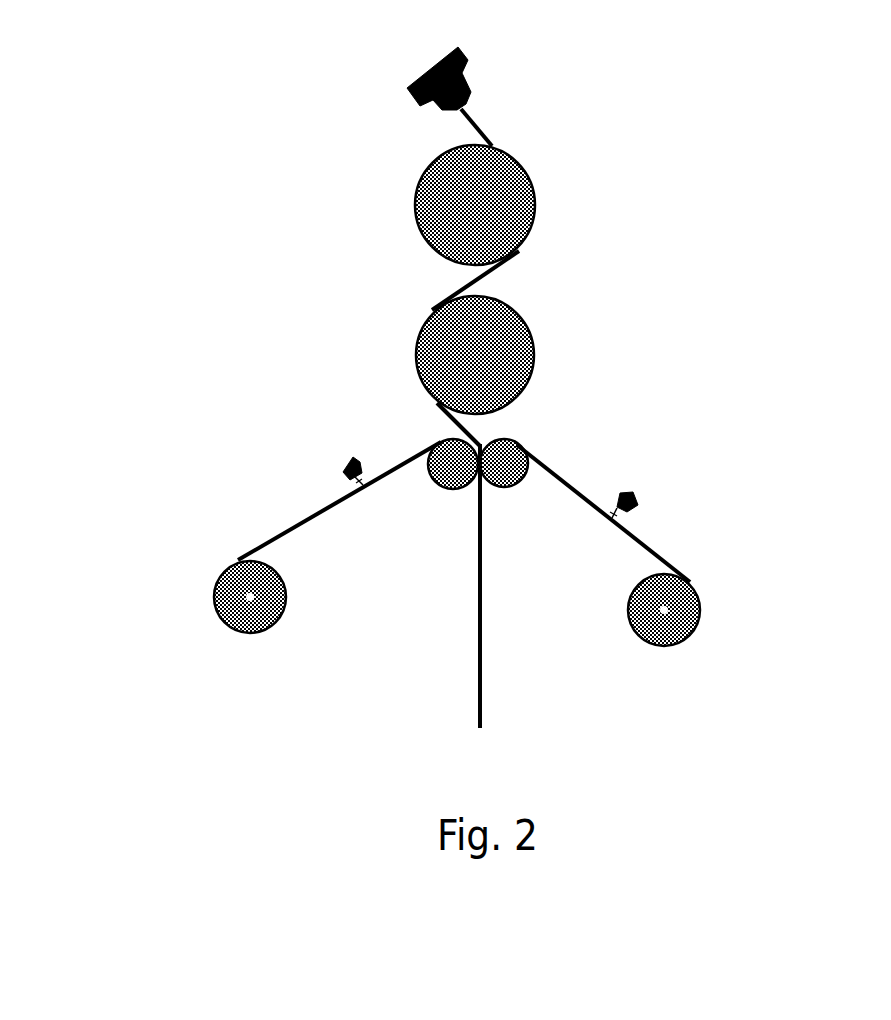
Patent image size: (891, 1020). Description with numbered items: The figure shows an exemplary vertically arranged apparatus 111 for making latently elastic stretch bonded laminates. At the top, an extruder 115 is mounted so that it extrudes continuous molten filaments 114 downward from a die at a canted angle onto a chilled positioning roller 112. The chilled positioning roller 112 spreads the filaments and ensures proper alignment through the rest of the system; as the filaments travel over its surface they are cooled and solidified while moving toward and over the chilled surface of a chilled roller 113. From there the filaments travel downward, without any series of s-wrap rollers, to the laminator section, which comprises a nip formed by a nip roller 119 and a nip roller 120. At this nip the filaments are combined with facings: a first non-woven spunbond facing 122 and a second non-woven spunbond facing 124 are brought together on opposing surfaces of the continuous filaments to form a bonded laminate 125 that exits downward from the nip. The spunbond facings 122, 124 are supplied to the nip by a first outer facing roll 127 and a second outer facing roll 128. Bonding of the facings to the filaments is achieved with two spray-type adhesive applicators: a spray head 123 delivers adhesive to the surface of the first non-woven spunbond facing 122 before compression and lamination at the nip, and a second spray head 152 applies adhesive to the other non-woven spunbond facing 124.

The vertically arranged apparatus 111 is at (666, 218).
The chilled positioning roller 112 is at (417, 208).
The chilled roller 113 is at (420, 340).
The continuous molten filaments 114 is at (482, 128).
The extruder 115 is at (468, 62).
The nip roller 119 is at (440, 487).
The nip roller 120 is at (516, 484).
The first non-woven spunbond facing 122 is at (312, 521).
The spray head 123 is at (343, 468).
The second non-woven spunbond facing 124 is at (648, 543).
The bonded laminate 125 is at (477, 613).
The first outer facing roll 127 is at (220, 618).
The second outer facing roll 128 is at (695, 622).
The second spray head 152 is at (640, 500).